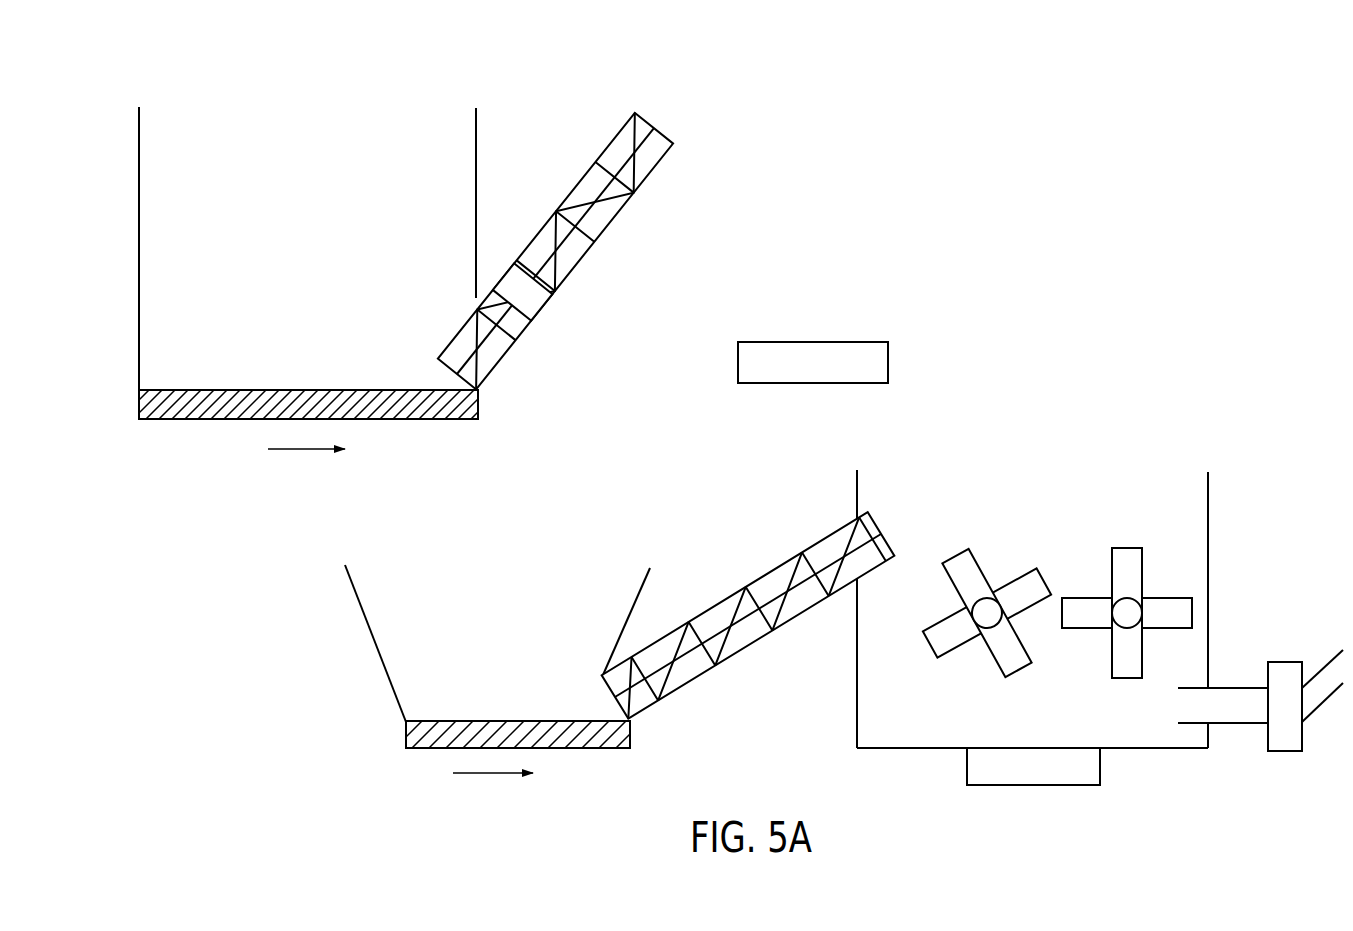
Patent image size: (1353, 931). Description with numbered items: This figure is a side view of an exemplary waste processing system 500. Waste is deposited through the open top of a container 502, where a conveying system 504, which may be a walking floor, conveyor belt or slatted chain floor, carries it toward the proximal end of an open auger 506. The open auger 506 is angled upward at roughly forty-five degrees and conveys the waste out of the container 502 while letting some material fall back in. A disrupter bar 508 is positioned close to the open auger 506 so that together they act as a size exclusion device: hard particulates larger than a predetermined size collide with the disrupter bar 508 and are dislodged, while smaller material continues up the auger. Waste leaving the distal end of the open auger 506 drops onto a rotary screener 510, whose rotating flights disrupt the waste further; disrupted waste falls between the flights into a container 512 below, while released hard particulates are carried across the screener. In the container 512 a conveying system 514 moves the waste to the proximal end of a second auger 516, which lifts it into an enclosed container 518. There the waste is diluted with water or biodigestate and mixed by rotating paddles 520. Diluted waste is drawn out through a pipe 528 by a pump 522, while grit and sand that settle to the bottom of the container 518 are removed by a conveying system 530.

The waste processing system 500 is at (779, 101).
The container 502 is at (139, 188).
The conveying system 504 is at (203, 420).
The open auger 506 is at (600, 153).
The disrupter bar 508 is at (510, 270).
The rotary screener 510 is at (889, 362).
The container 512 is at (349, 585).
The conveying system 514 is at (423, 750).
The auger 516 is at (768, 576).
The container 518 is at (1210, 535).
The paddle 520 is at (1012, 576).
The pump 522 is at (1280, 752).
The pipe 528 is at (1232, 688).
The conveying system 530 is at (1030, 787).